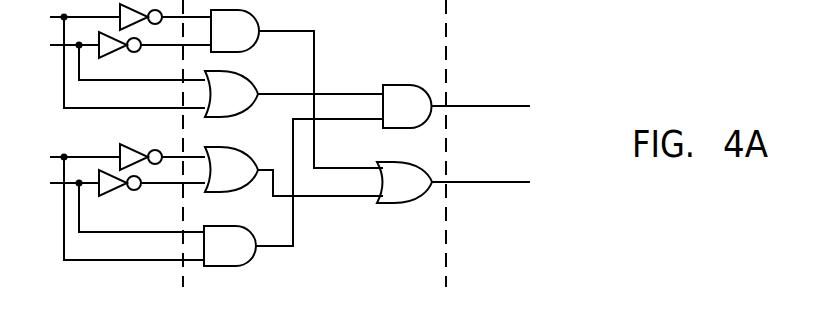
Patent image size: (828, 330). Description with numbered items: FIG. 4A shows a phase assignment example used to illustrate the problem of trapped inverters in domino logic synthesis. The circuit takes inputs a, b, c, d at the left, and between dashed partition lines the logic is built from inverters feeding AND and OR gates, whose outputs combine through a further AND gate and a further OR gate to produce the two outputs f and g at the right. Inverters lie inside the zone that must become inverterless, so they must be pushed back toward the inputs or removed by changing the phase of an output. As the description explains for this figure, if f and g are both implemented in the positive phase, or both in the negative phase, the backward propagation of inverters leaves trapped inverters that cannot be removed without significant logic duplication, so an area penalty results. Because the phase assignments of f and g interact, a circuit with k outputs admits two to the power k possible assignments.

The input a is at (116, 55).
The input signal b is at (116, 55).
The input signal c is at (115, 201).
The input signal d is at (115, 200).
The output f is at (488, 106).
The output g is at (492, 182).